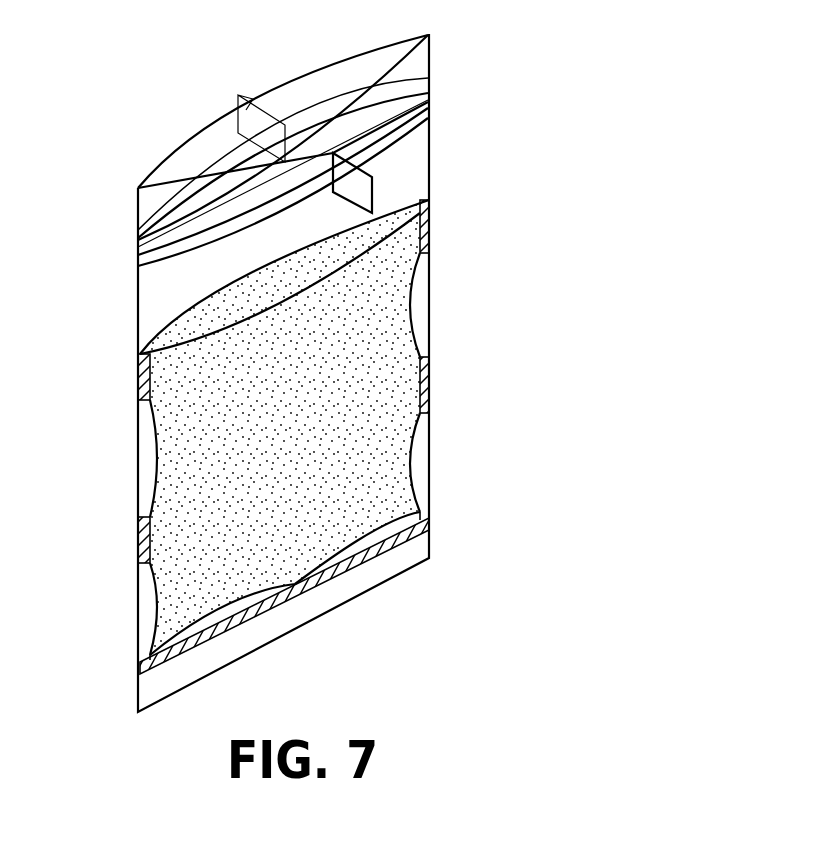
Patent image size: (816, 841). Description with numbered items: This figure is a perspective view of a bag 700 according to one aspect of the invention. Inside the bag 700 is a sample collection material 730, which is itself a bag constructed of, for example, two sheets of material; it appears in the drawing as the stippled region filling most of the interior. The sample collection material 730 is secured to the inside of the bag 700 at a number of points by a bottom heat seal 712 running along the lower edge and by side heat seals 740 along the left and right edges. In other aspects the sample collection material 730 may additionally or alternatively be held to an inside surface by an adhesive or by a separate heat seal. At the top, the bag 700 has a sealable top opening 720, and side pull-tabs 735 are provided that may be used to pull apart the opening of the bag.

The bag 700 is at (584, 209).
The bottom heat seal 712 is at (429, 521).
The sealable top opening 720 is at (429, 97).
The sample collection material 730 is at (340, 350).
The side pull-tabs 735 is at (257, 118).
The side heat seals 740 is at (429, 237).